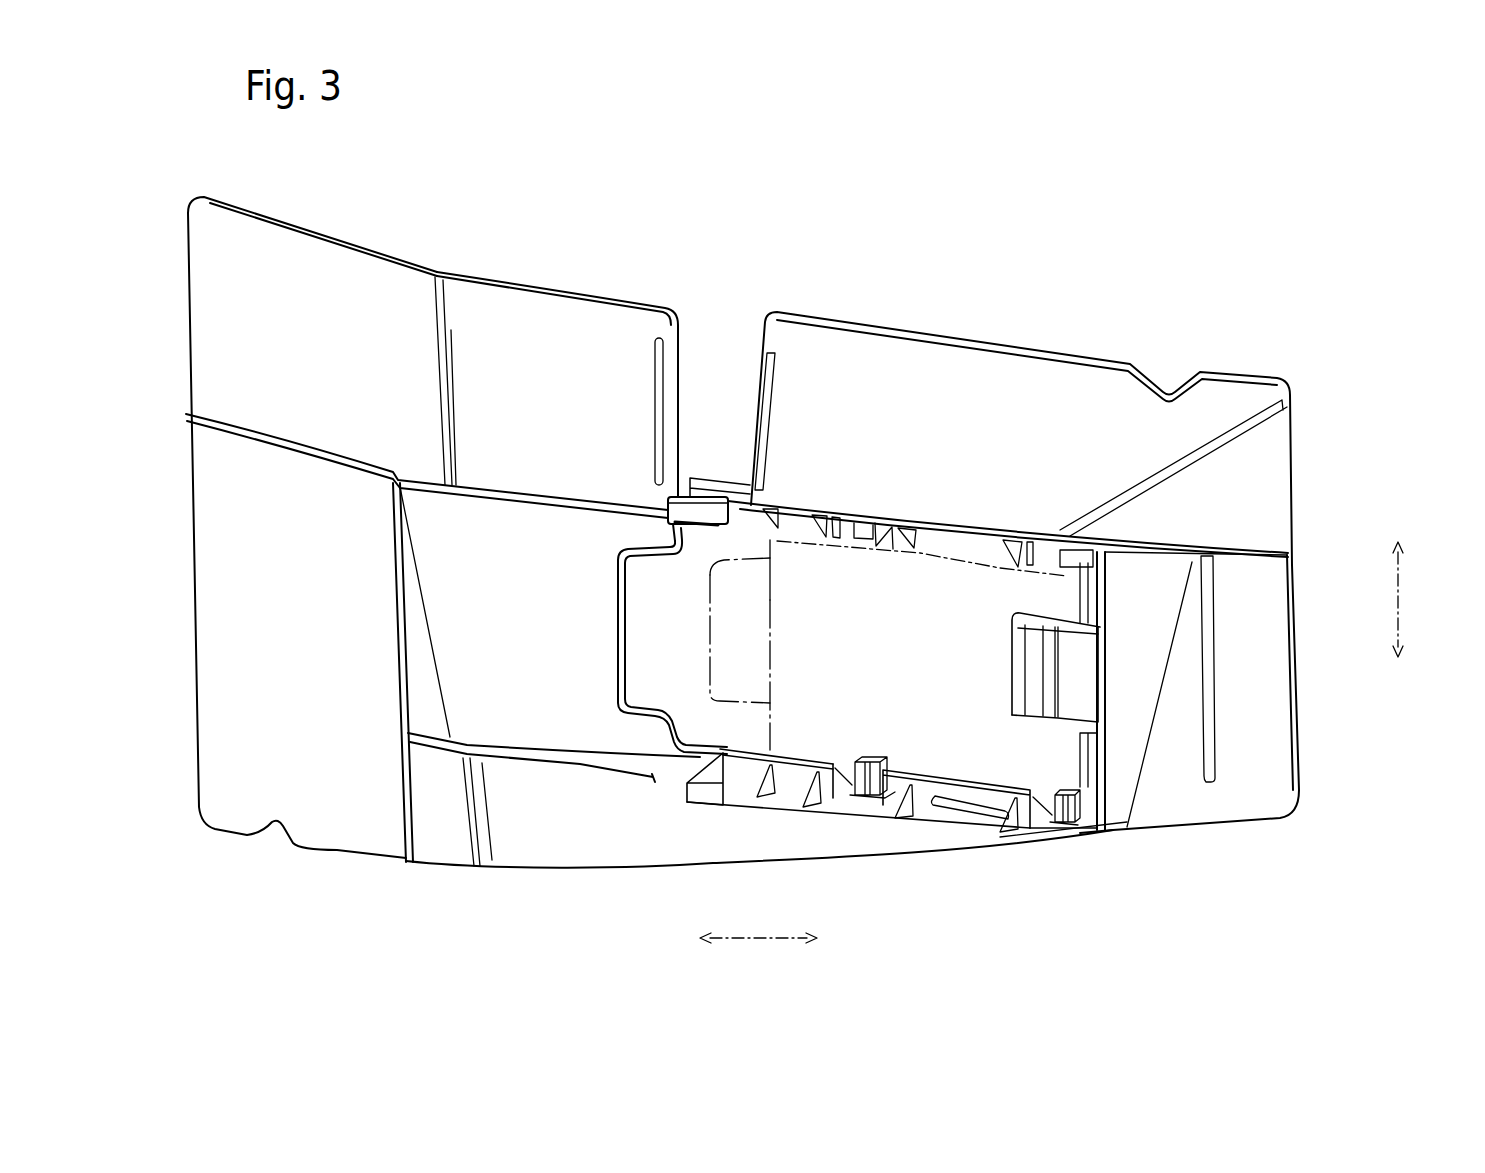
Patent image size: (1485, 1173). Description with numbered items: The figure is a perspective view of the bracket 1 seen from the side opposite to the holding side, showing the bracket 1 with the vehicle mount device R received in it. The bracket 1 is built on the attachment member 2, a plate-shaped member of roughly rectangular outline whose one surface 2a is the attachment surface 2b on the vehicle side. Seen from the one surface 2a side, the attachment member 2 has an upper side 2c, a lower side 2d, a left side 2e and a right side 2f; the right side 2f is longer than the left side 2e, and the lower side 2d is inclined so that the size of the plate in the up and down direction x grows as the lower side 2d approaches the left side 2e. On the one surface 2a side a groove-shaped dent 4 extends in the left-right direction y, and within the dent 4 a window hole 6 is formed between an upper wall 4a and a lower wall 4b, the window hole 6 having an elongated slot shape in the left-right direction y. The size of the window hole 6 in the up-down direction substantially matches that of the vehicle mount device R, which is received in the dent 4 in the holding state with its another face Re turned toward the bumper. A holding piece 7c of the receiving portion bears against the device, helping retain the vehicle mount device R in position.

The bracket 1 is at (787, 593).
The attachment member 2 is at (765, 566).
The one surface 2a is at (1080, 438).
The attachment surface 2b is at (1253, 468).
The upper side 2c is at (557, 290).
The lower side 2d is at (580, 867).
The left side 2e is at (190, 572).
The right side 2f is at (1300, 677).
The dent 4 is at (883, 832).
The upper wall 4a is at (963, 577).
The lower wall 4b is at (925, 820).
The window hole 6 is at (637, 632).
The holding piece 7c is at (1063, 675).
The vehicle mount device R is at (833, 567).
The another face Re is at (975, 568).
The up and down direction x is at (1405, 602).
The left-right direction y is at (777, 947).